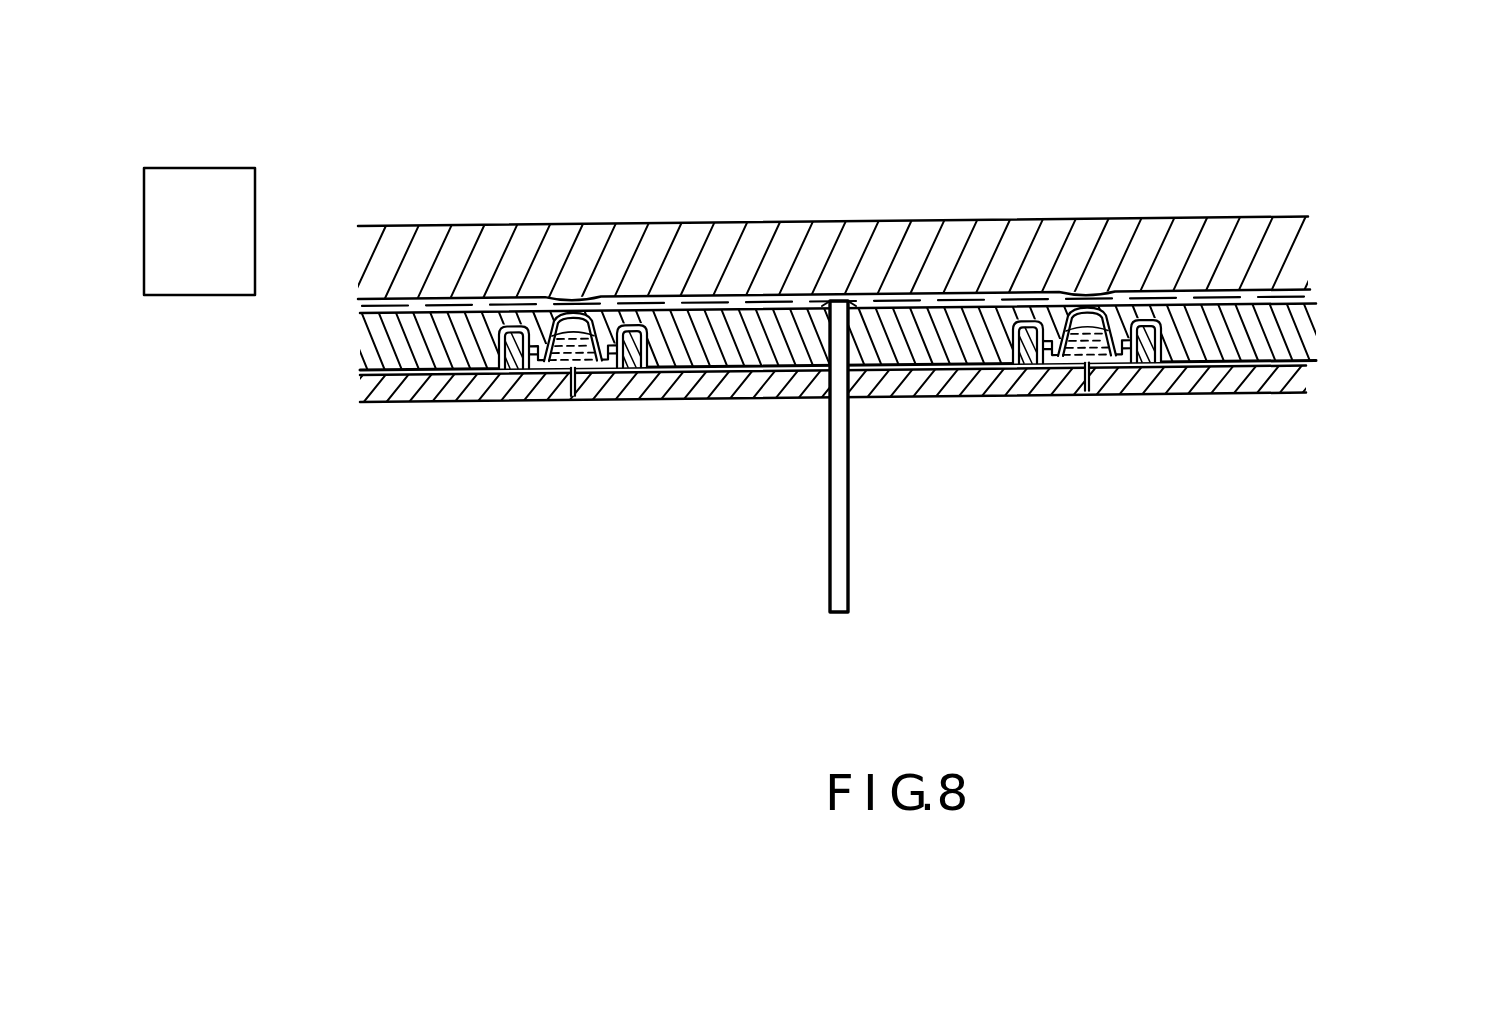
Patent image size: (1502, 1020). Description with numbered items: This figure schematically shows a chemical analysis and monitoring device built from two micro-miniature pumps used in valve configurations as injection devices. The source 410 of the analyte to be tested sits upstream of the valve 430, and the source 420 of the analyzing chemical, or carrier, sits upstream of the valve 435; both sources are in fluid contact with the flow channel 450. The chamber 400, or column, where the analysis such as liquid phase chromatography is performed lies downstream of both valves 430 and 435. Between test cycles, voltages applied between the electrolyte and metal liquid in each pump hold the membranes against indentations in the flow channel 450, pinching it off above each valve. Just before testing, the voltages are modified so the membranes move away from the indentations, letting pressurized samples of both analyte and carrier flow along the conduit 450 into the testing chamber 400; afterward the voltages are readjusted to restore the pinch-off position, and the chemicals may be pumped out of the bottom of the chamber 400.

The chamber 400 is at (850, 508).
The source of the analyte 410 is at (367, 307).
The source of the analyzing chemical 420 is at (1304, 292).
The valve 430 is at (570, 413).
The valve 435 is at (1096, 397).
The flow channel 450 is at (949, 302).